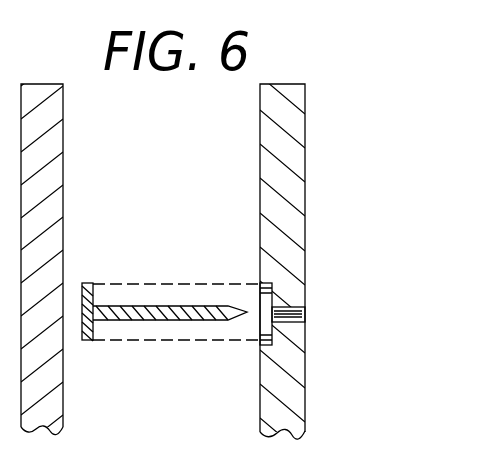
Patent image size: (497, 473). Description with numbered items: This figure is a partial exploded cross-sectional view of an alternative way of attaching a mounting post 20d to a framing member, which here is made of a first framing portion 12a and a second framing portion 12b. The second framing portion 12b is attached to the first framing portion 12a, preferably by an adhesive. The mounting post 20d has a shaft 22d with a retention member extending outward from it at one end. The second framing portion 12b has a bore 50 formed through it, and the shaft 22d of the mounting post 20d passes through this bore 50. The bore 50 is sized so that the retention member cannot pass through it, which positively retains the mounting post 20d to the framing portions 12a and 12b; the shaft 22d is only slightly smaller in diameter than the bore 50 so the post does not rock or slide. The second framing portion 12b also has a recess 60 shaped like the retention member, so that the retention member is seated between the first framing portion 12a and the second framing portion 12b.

The first framing portion 12a is at (47, 208).
The second framing portion 12b is at (282, 373).
The mounting post 20d is at (171, 305).
The shaft 22d is at (149, 321).
The recess 60 is at (268, 302).
The bore 50 is at (300, 314).